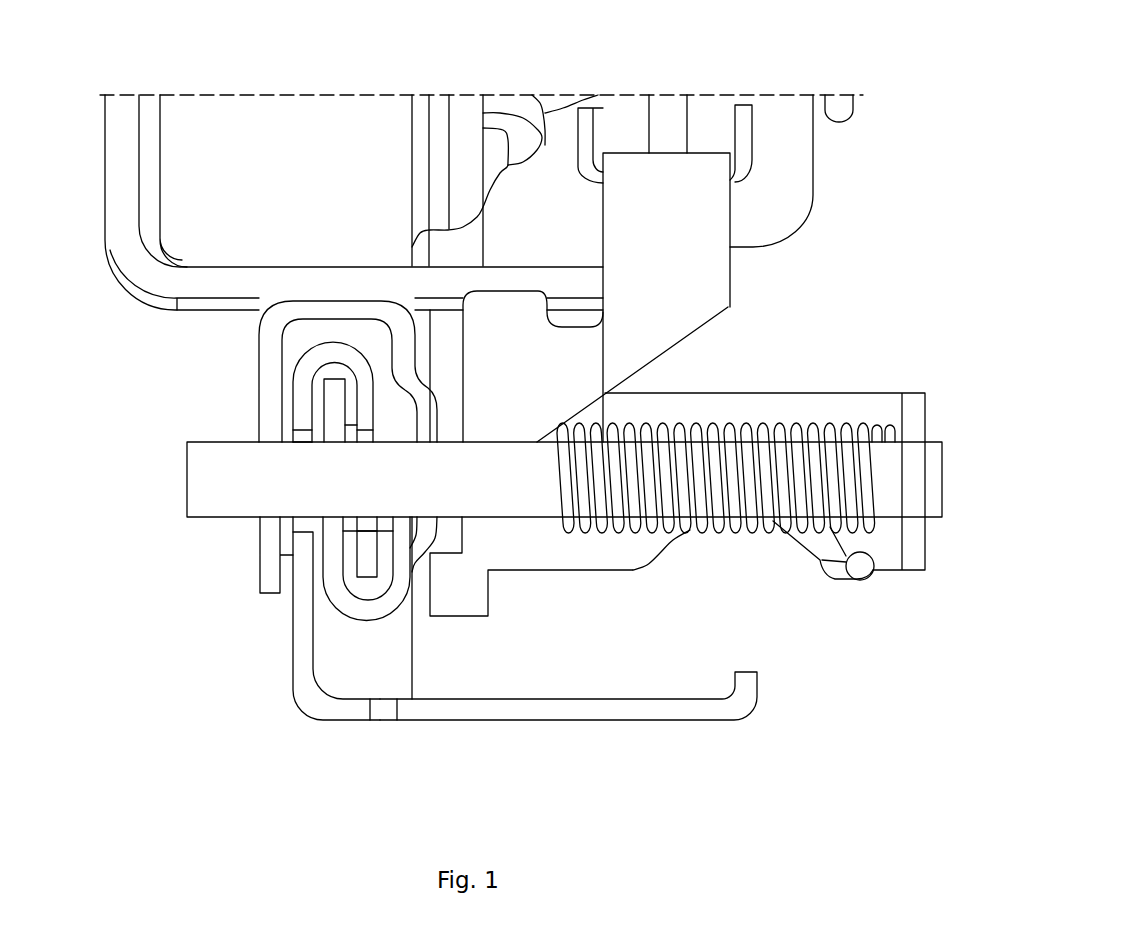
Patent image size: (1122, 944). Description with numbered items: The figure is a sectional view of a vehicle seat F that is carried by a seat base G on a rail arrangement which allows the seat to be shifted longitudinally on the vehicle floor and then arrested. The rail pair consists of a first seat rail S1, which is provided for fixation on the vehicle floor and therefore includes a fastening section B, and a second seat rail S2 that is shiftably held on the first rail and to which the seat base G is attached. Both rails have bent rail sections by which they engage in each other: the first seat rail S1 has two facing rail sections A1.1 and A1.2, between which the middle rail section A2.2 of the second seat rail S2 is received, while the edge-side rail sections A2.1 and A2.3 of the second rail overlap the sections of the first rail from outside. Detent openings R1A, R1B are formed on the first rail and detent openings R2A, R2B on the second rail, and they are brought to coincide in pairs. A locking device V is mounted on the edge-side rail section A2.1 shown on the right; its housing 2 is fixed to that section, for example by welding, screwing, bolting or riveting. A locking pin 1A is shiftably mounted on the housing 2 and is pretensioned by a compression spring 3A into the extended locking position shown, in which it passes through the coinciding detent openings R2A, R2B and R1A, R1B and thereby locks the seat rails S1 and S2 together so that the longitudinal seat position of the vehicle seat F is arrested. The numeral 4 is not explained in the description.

The locking pin 1A is at (508, 488).
The housing 2 is at (801, 391).
The compression spring 3A is at (872, 520).
The housing block 4 is at (730, 287).
The fastening section B is at (677, 710).
The vehicle seat F is at (724, 69).
The seat base G is at (105, 172).
The locking device V is at (901, 338).
The first seat rail S1 is at (289, 712).
The second seat rail S2 is at (256, 339).
The rail section A1.1 is at (365, 407).
The rail section A1.2 is at (297, 385).
The edge-side rail section A2.1 is at (435, 518).
The middle rail section A2.2 is at (327, 602).
The edge-side rail section A2.3 is at (253, 579).
The detent opening R1A is at (367, 520).
The detent opening R1B is at (297, 437).
The detent opening R2A is at (320, 540).
The detent opening R2B is at (272, 518).